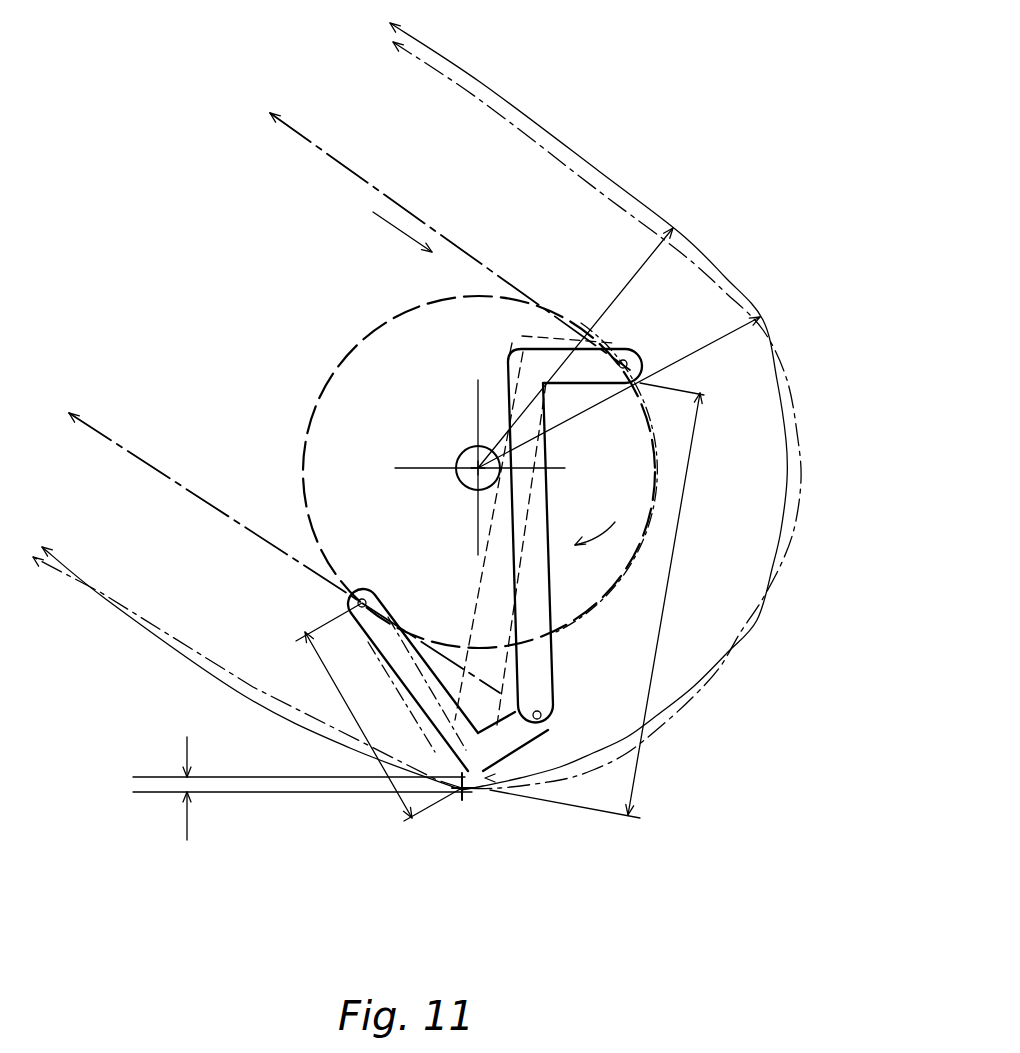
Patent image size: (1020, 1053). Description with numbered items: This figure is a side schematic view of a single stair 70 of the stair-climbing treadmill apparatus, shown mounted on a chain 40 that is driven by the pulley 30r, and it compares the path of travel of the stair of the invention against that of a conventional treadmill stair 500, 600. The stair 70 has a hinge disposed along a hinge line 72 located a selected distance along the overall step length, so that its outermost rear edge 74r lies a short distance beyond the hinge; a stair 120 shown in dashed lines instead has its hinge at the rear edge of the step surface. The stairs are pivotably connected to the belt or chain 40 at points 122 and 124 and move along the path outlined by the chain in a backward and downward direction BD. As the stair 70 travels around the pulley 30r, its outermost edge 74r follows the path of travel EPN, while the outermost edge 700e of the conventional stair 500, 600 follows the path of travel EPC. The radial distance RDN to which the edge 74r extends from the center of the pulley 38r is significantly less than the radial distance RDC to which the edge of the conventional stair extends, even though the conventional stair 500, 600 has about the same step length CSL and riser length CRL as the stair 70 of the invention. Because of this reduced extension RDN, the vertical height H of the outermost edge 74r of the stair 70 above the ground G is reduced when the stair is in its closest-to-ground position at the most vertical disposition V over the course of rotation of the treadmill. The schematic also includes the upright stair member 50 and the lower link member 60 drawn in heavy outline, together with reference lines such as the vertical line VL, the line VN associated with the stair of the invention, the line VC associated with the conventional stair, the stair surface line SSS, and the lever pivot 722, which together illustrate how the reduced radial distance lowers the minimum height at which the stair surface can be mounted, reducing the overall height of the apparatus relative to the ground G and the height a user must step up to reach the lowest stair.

The pulley 30r is at (320, 392).
The center of the pulley 38r is at (462, 459).
The chain 40 is at (225, 512).
The arm 50 is at (551, 516).
The lever 60 is at (414, 700).
The stair 70 is at (605, 478).
The hinge line 72 is at (541, 715).
The rear edge 74r is at (540, 748).
The stair 120 is at (507, 602).
The point 122 is at (628, 352).
The point 124 is at (369, 590).
The conventional treadmill stair 500 is at (463, 580).
The conventional treadmill stair 600 is at (420, 652).
The outermost edge 700e is at (487, 795).
The lever pivot 722 is at (464, 800).
The backward and downward direction BD is at (394, 228).
The radial distance RDN is at (612, 303).
The radial distance RDC is at (698, 351).
The vertical line VL is at (478, 396).
The most vertical disposition V is at (553, 478).
The step length CSL is at (664, 602).
The side surface SSS is at (550, 662).
The path of travel EPC is at (763, 628).
The path of travel EPN is at (703, 683).
The upper line VN is at (150, 775).
The lower line VC is at (155, 795).
The vertical height H is at (184, 777).
The riser length CRL is at (347, 713).
The ground G is at (230, 795).